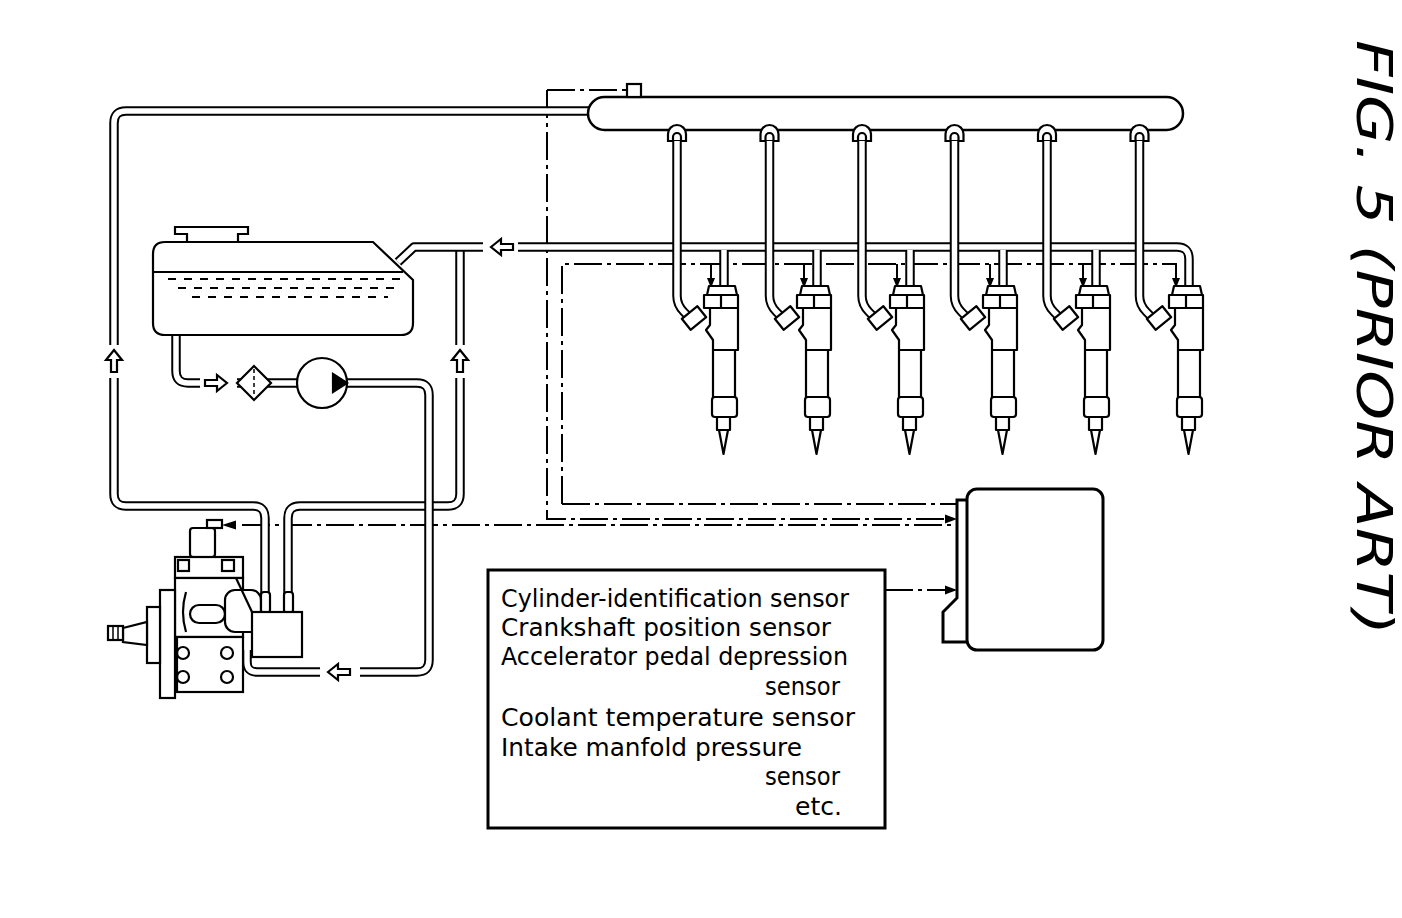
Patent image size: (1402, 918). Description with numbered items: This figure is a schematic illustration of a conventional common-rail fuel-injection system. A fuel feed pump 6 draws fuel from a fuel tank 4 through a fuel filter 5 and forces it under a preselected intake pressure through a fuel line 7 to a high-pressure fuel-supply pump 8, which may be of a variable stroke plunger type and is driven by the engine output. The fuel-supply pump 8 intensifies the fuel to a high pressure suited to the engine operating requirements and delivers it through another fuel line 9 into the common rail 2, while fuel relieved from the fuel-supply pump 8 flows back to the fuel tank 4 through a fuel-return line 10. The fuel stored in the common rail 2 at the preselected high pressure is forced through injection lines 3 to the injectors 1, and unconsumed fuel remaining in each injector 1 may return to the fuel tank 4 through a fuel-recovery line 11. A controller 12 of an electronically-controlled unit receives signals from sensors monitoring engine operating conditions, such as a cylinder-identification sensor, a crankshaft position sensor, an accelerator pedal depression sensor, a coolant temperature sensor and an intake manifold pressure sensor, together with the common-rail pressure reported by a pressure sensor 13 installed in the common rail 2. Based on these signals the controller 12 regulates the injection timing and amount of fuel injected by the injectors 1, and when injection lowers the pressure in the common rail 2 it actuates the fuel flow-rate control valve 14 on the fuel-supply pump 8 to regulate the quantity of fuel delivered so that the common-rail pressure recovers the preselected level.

The injector 1 is at (736, 383).
The common rail 2 is at (906, 96).
The injection line 3 is at (684, 205).
The fuel tank 4 is at (330, 251).
The fuel filter 5 is at (247, 398).
The fuel feed pump 6 is at (322, 408).
The fuel line 7 is at (425, 601).
The high-pressure fuel-supply pump 8 is at (203, 680).
The fuel line 9 is at (119, 425).
The fuel-return line 10 is at (465, 430).
The fuel-recovery line 11 is at (594, 241).
The controller 12 is at (1090, 583).
The pressure sensor 13 is at (641, 83).
The fuel flow-rate control valve 14 is at (292, 628).